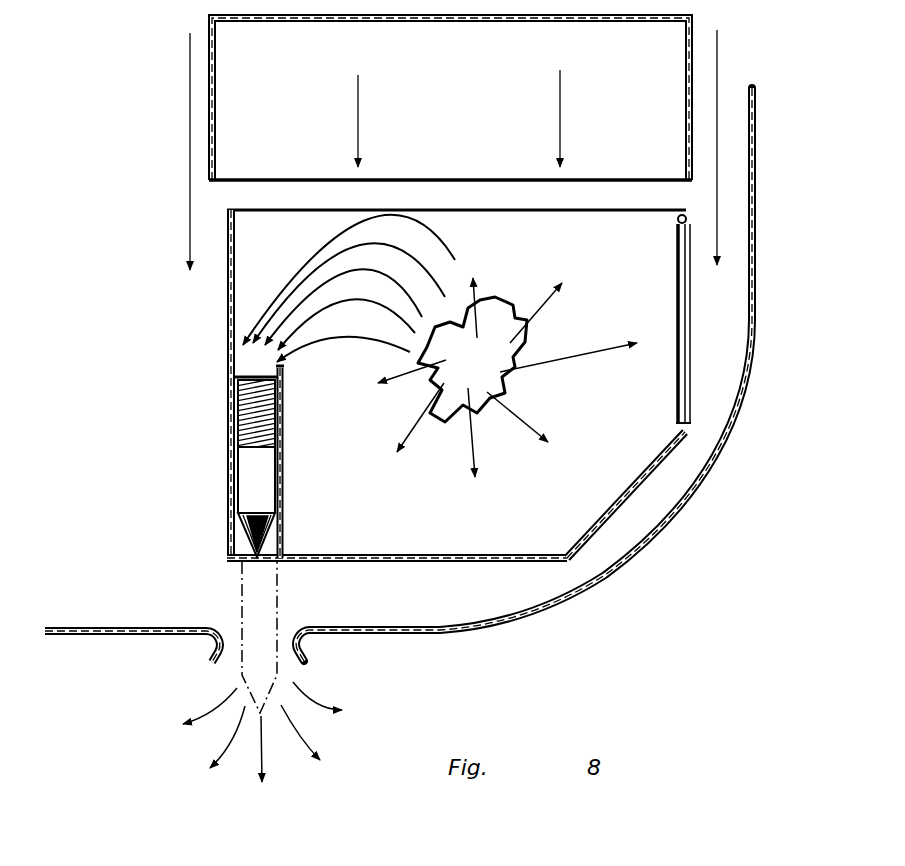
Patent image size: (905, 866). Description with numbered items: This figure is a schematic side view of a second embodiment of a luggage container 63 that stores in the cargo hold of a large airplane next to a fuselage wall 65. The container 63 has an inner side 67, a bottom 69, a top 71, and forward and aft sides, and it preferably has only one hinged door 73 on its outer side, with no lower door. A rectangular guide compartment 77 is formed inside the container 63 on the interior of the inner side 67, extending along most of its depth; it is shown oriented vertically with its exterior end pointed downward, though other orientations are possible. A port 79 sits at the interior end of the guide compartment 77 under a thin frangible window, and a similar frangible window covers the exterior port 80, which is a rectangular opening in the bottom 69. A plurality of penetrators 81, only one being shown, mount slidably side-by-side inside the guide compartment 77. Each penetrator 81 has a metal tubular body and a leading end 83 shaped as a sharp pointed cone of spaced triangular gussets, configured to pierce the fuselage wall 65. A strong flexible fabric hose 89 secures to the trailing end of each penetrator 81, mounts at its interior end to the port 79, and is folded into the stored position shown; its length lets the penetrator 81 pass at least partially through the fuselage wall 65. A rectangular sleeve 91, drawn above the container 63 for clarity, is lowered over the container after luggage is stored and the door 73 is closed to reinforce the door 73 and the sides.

The container 63 is at (650, 494).
The fuselage wall 65 is at (745, 375).
The inner side 67 is at (227, 303).
The bottom 69 is at (418, 561).
The top 71 is at (412, 210).
The door 73 is at (698, 305).
The guide compartment 77 is at (273, 532).
The port 79 is at (248, 375).
The exterior port 80 is at (257, 567).
The penetrator 81 is at (260, 473).
The leading end 83 is at (250, 551).
The hose 89 is at (245, 418).
The rectangular sleeve 91 is at (212, 116).